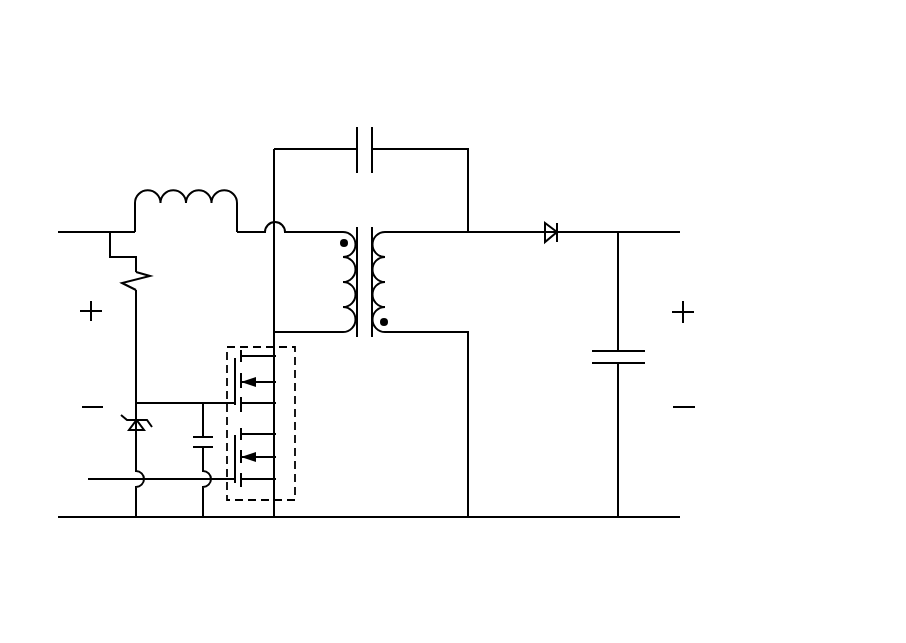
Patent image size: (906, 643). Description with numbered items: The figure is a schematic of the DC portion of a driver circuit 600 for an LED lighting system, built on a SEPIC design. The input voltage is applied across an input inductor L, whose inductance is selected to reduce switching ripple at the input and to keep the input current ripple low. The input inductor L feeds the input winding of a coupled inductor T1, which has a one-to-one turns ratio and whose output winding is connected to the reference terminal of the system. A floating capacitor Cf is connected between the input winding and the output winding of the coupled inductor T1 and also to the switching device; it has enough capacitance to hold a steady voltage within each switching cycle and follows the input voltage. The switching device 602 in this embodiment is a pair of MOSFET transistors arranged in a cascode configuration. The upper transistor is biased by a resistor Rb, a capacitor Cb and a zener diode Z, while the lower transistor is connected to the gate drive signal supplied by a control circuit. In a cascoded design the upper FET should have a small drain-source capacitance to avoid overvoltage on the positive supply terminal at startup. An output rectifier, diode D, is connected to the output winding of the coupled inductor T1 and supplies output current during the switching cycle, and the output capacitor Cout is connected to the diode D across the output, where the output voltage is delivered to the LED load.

The driver circuit 600 is at (697, 79).
The switching device 602 is at (295, 448).
The input inductor L is at (186, 188).
The coupled inductor T1 is at (383, 300).
The floating capacitor Cf is at (365, 129).
The diode D is at (551, 214).
The output capacitor Cout is at (593, 374).
The resistor Rb is at (151, 282).
The zener diode Z is at (128, 427).
The capacitor Cb is at (190, 460).